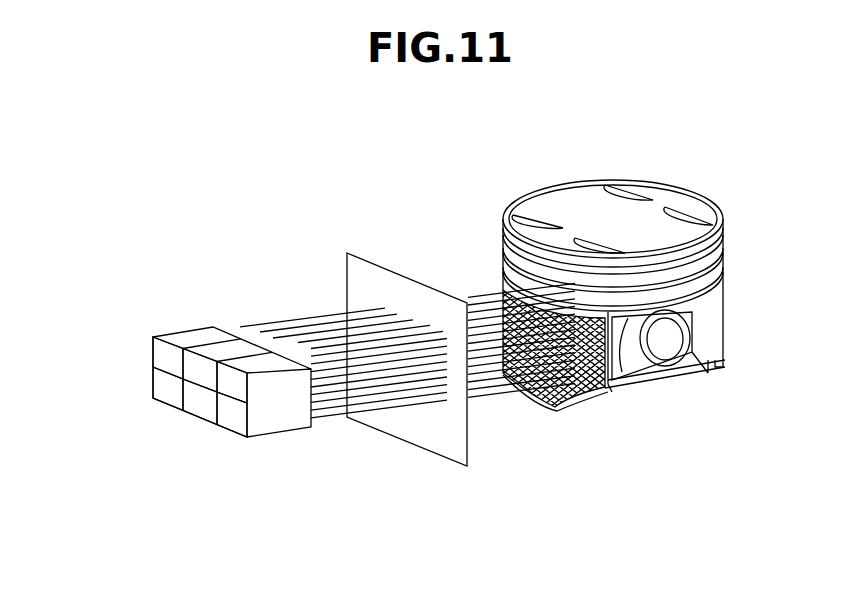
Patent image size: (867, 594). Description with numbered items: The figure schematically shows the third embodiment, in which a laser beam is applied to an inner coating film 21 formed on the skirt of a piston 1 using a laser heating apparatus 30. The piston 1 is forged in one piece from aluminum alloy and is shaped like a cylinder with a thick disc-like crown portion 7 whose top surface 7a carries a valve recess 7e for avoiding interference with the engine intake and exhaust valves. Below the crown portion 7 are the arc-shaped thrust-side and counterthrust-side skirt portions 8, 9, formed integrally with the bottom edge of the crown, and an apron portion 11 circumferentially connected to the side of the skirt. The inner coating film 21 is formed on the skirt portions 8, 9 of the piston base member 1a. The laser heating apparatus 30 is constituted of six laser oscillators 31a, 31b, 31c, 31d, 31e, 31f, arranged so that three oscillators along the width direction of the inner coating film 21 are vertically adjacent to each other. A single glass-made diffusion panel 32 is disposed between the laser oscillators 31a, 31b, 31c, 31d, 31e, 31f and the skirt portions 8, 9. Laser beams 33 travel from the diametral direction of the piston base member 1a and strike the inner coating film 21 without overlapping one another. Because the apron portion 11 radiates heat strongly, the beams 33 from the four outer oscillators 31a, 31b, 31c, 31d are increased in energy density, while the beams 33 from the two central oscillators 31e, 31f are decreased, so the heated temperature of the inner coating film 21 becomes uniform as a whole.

The piston 1 is at (748, 317).
The piston base member 1a is at (725, 293).
The crown portion 7 is at (693, 195).
The top surface 7a is at (658, 192).
The valve recess 7e is at (627, 187).
The thrust-side skirt portion 8 is at (598, 390).
The counterthrust-side skirt portion 9 is at (725, 340).
The apron portion 11 is at (697, 347).
The inner coating film 21 is at (545, 402).
The laser heating apparatus 30 is at (300, 448).
The laser oscillator 31a is at (160, 351).
The laser oscillator 31b is at (160, 386).
The laser oscillator 31c is at (235, 387).
The laser oscillator 31d is at (230, 430).
The central laser oscillator 31e is at (197, 370).
The central laser oscillator 31f is at (193, 407).
The diffusion panel 32 is at (415, 293).
The laser beams 33 is at (320, 313).